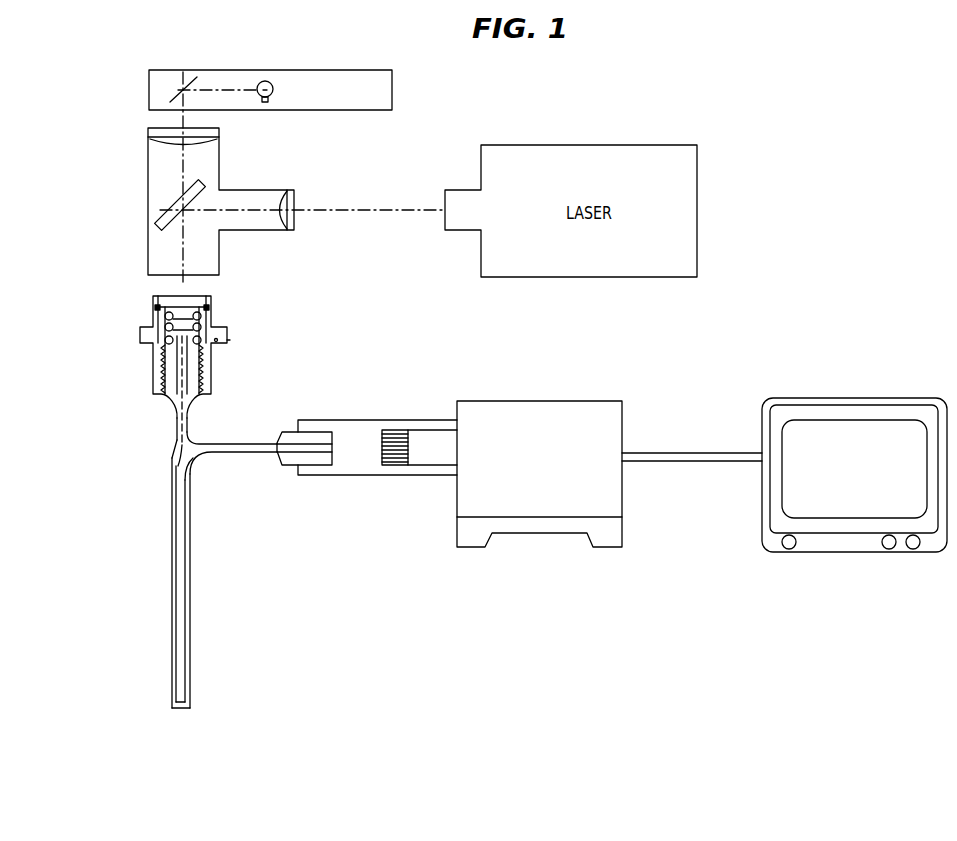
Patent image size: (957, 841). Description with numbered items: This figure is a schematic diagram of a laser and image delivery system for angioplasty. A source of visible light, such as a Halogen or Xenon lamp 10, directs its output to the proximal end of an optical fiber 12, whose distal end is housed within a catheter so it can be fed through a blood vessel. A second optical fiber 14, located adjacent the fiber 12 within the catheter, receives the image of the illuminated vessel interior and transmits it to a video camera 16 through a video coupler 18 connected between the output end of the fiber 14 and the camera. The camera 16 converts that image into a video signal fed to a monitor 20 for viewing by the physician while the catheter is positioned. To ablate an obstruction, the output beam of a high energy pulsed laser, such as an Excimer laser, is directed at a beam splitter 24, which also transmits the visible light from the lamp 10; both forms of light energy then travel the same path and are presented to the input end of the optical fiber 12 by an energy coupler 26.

The lamp 10 is at (270, 82).
The optical fiber 12 is at (177, 453).
The second optical fiber 14 is at (181, 573).
The video camera 16 is at (540, 401).
The video coupler 18 is at (356, 442).
The monitor 20 is at (855, 398).
The beam splitter 24 is at (168, 201).
The energy coupler 26 is at (128, 336).